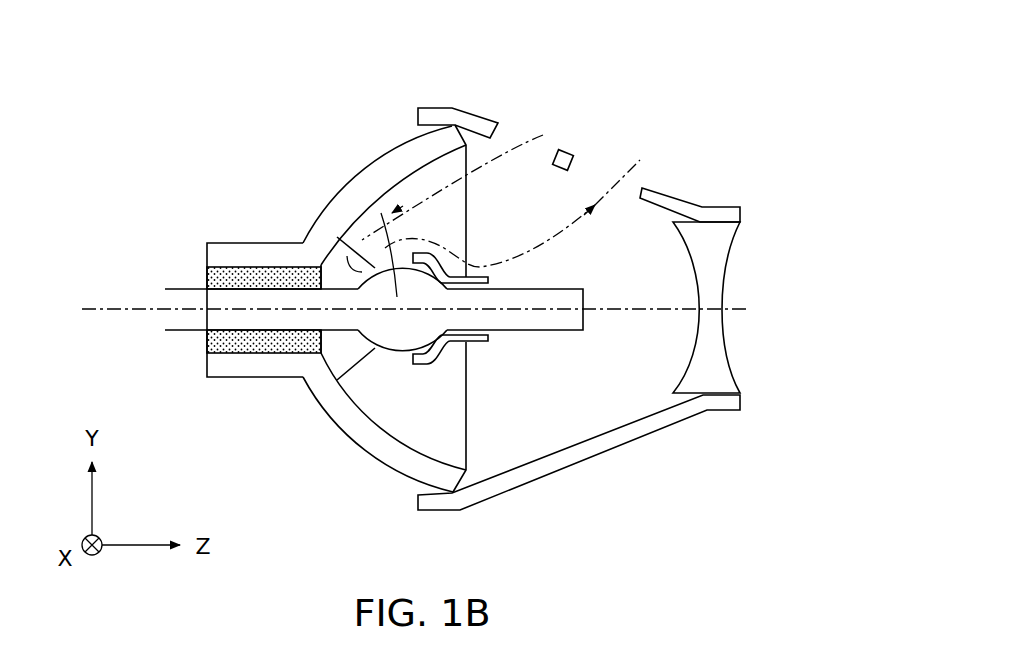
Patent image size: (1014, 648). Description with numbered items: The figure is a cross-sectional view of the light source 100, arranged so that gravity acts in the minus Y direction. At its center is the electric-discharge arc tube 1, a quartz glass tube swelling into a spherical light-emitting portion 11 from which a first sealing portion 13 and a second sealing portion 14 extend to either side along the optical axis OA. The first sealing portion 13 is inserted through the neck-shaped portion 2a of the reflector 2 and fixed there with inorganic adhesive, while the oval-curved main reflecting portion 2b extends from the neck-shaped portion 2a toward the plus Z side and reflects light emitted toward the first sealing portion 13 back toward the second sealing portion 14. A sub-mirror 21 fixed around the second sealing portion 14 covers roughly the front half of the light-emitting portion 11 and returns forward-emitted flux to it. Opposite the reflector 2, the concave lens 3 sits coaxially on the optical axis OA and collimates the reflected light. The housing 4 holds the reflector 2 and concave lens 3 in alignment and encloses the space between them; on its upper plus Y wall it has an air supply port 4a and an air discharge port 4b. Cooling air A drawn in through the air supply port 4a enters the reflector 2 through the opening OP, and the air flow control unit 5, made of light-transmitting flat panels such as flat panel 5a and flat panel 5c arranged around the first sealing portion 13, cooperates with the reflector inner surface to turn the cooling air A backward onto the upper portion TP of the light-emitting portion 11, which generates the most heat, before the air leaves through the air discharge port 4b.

The light source 100 is at (698, 163).
The arc tube 1 is at (347, 257).
The reflector 2 is at (358, 172).
The neck-shaped portion 2a is at (227, 372).
The main reflecting portion 2b is at (362, 435).
The concave lens 3 is at (713, 356).
The housing 4 is at (481, 127).
The air supply port 4a is at (548, 150).
The air discharge port 4b is at (600, 168).
The air flow control unit 5 is at (326, 330).
The flat panel 5a is at (324, 256).
The flat panel 5c is at (335, 365).
The light-emitting portion 11 is at (397, 342).
The first sealing portion 13 is at (262, 327).
The second sealing portion 14 is at (558, 322).
The sub-mirror 21 is at (441, 255).
The opening OP is at (470, 200).
The upper portion TP is at (404, 262).
The cooling air A is at (578, 222).
The optical axis OA is at (112, 313).